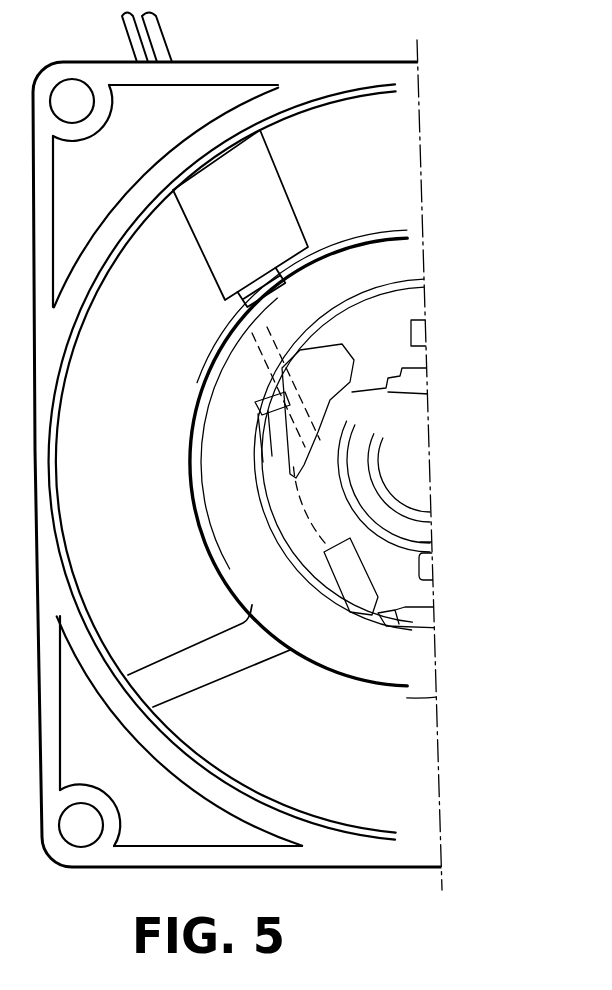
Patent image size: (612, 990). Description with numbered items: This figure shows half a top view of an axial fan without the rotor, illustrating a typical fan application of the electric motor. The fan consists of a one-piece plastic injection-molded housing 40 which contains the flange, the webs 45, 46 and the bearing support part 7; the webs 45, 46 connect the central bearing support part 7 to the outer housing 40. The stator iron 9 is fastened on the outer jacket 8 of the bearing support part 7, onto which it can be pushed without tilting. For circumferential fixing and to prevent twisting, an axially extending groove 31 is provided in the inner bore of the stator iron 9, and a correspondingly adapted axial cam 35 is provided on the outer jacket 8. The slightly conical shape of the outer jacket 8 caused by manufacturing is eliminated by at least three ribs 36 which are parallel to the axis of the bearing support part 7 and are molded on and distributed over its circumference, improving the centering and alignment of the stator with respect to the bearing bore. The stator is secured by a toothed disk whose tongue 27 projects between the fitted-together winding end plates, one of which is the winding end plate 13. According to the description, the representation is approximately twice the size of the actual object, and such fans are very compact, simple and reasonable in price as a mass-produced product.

The housing 40 is at (296, 77).
The web 45 is at (218, 668).
The web 46 is at (283, 218).
The stator iron 9 is at (281, 393).
The winding end plate 13 is at (428, 294).
The tongue 27 is at (287, 541).
The axially extending groove 31 is at (401, 366).
The axial cam 35 is at (406, 378).
The rib 36 is at (399, 426).
The bearing support part 7 is at (422, 542).
The outer jacket 8 is at (438, 581).